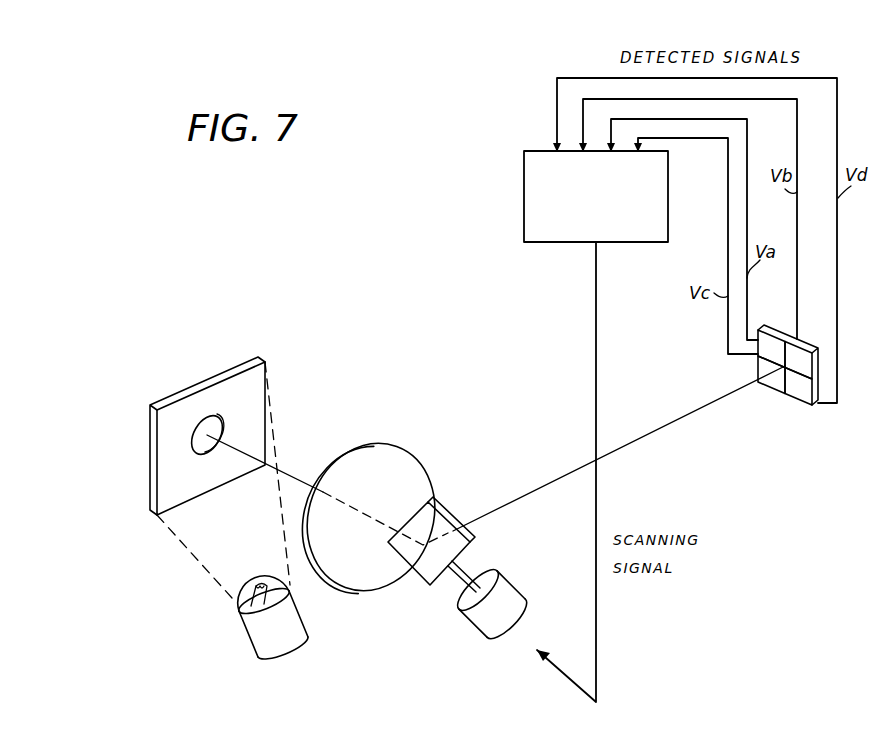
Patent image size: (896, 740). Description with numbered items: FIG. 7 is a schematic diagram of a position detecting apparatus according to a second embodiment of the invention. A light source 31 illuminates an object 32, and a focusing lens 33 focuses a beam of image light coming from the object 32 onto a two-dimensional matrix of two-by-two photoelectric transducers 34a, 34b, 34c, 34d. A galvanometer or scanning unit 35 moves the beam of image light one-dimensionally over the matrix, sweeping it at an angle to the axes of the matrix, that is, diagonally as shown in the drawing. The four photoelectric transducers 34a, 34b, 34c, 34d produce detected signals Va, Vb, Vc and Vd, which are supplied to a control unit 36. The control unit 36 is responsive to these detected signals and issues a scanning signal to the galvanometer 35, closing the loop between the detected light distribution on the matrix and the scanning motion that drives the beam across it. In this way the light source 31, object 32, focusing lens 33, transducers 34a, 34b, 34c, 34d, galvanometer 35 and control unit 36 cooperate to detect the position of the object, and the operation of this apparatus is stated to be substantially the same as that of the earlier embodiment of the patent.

The light source 31 is at (248, 636).
The object 32 is at (213, 412).
The focusing lens 33 is at (405, 448).
The photoelectric transducer 34a is at (777, 328).
The photoelectric transducer 34b is at (812, 348).
The photoelectric transducer 34c is at (777, 383).
The photoelectric transducer 34d is at (802, 398).
The galvanometer 35 is at (509, 584).
The control unit 36 is at (524, 165).